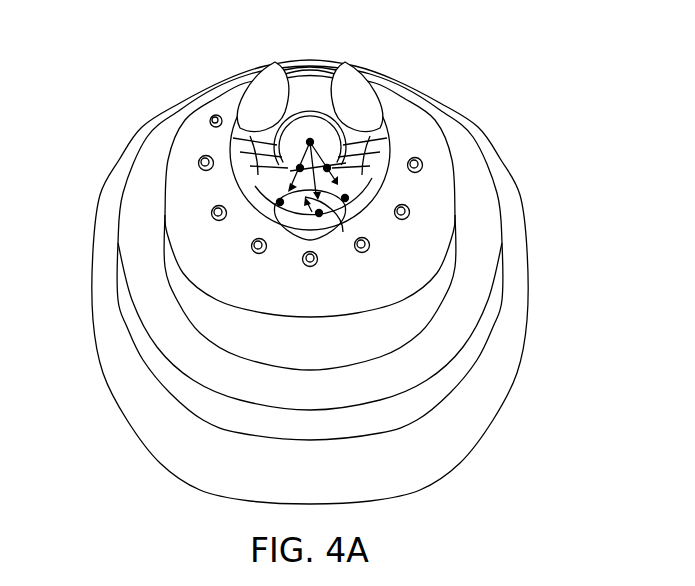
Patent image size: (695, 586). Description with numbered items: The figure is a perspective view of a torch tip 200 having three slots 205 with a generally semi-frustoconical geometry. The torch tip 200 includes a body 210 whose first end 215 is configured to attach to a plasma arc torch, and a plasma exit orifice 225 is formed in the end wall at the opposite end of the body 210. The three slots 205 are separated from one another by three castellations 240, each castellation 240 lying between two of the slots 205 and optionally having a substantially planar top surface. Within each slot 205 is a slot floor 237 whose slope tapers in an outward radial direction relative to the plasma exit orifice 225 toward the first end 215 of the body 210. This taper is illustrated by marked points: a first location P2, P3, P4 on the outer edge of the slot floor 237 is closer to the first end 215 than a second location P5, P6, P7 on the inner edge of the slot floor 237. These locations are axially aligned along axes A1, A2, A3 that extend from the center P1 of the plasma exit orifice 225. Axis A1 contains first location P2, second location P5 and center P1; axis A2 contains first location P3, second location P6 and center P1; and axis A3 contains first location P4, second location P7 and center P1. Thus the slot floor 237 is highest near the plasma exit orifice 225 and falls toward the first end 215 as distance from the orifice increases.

The torch tip 200 is at (72, 74).
The slot 205 is at (252, 100).
The body 210 is at (543, 184).
The first end 215 is at (553, 331).
The plasma exit orifice 225 is at (320, 140).
The slot floor 237 is at (375, 118).
The castellation 240 is at (311, 80).
The center of the plasma exit orifice P1 is at (313, 167).
The first location P2 is at (267, 203).
The first location P3 is at (327, 221).
The first location P4 is at (355, 205).
The second location P5 is at (314, 156).
The second location P6 is at (305, 192).
The second location P7 is at (331, 167).
The axis A1 is at (258, 189).
The axis A2 is at (343, 232).
The axis A3 is at (368, 181).